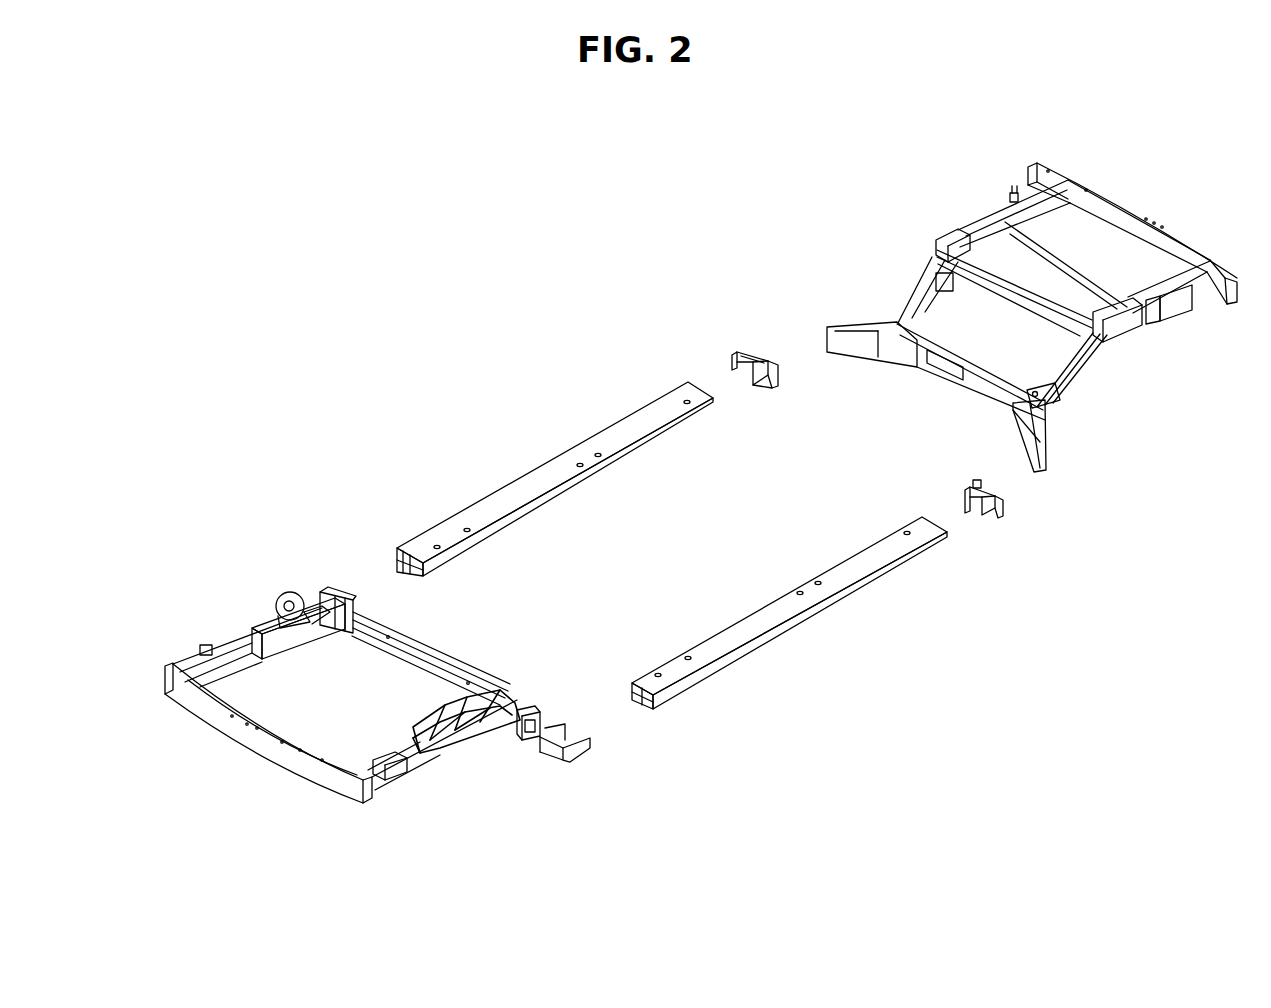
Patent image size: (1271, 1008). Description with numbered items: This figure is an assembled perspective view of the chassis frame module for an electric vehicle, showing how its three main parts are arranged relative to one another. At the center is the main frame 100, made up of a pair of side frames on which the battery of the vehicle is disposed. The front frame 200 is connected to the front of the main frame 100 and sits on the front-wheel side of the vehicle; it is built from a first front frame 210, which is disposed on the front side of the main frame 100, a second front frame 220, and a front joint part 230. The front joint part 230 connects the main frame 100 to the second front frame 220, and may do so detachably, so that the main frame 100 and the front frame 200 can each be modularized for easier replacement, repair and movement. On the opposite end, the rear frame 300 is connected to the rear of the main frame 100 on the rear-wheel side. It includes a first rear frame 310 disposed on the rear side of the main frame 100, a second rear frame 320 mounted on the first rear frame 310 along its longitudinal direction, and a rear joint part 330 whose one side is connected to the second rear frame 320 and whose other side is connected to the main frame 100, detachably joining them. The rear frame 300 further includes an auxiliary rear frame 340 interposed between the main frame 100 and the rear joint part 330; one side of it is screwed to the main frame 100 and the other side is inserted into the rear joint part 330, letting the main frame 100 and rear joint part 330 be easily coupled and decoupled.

The main frame 100 is at (526, 433).
The front frame 200 is at (1020, 293).
The first front frame 210 is at (956, 228).
The second front frame 220 is at (844, 325).
The front joint part 230 is at (737, 346).
The rear frame 300 is at (405, 701).
The first rear frame 310 is at (383, 750).
The second rear frame 320 is at (450, 748).
The rear joint part 330 is at (538, 750).
The auxiliary rear frame 340 is at (595, 757).